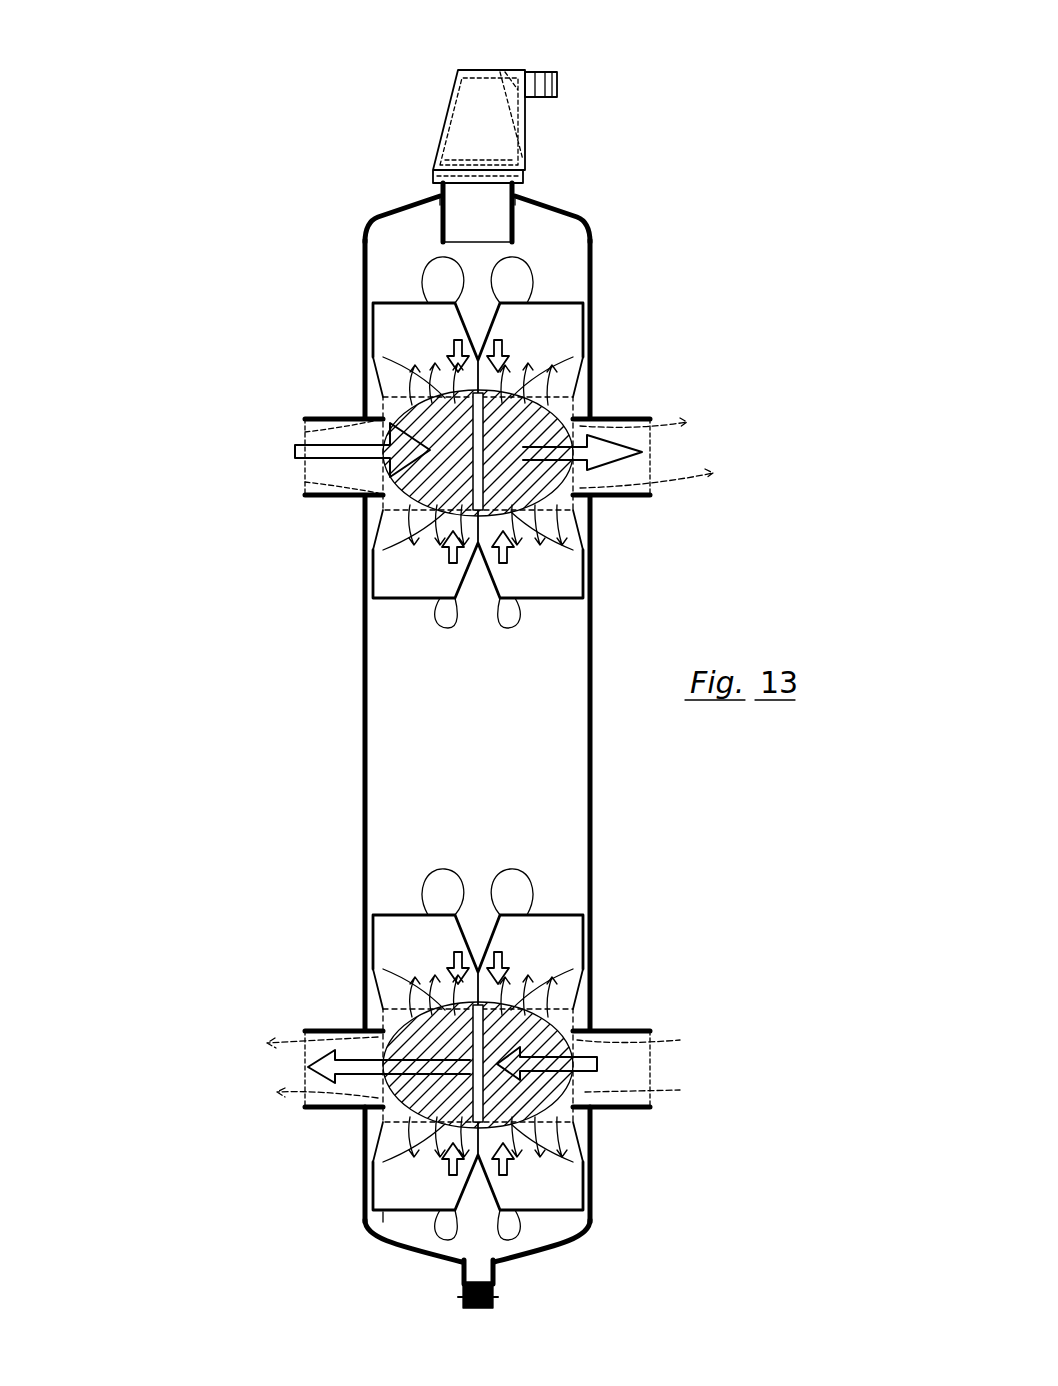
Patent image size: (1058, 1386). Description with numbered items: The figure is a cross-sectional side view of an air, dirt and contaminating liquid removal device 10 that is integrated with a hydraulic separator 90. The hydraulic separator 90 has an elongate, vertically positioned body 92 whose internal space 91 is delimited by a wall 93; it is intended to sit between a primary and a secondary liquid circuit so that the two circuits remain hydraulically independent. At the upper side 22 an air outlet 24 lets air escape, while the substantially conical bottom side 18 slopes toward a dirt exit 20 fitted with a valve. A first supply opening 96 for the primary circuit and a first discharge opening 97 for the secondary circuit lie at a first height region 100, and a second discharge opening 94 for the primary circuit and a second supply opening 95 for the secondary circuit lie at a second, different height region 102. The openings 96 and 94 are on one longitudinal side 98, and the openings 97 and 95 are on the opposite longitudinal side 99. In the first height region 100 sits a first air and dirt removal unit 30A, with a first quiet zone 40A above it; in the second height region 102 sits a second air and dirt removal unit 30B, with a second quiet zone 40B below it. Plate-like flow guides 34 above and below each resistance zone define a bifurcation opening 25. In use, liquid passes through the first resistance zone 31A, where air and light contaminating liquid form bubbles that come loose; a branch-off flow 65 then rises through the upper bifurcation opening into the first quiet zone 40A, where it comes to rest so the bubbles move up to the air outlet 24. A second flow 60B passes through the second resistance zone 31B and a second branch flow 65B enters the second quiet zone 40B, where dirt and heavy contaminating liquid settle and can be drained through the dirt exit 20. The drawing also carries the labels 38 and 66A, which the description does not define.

The air, dirt and contaminating liquid removal device 10 is at (778, 333).
The bottom side 18 is at (557, 1247).
The dirt exit 20 is at (498, 1283).
The upper side 22 is at (557, 207).
The air outlet 24 is at (450, 97).
The bifurcation opening 25 is at (375, 385).
The first air and dirt removal unit 30A is at (593, 567).
The second air and dirt removal unit 30B is at (620, 918).
The first resistance zone 31A is at (545, 415).
The second resistance zone 31B is at (545, 1025).
The flow guides 34 is at (395, 345).
The flow loop region 38 is at (395, 287).
The first quiet zone 40A is at (400, 247).
The second quiet zone 40B is at (425, 1227).
The second flow 60B is at (577, 1068).
The branch-off flow 65 is at (555, 385).
The second branch flow 65B is at (597, 1153).
The first inlet flow 66A is at (295, 445).
The hydraulic separator 90 is at (811, 557).
The internal space 91 is at (397, 765).
The body 92 is at (363, 850).
The wall 93 is at (370, 668).
The second discharge opening 94 is at (308, 1070).
The second supply opening 95 is at (650, 1060).
The first supply opening 96 is at (307, 468).
The first discharge opening 97 is at (653, 442).
The longitudinal side 98 is at (300, 197).
The opposite longitudinal side 99 is at (653, 197).
The first height region 100 is at (209, 378).
The second height region 102 is at (222, 1153).